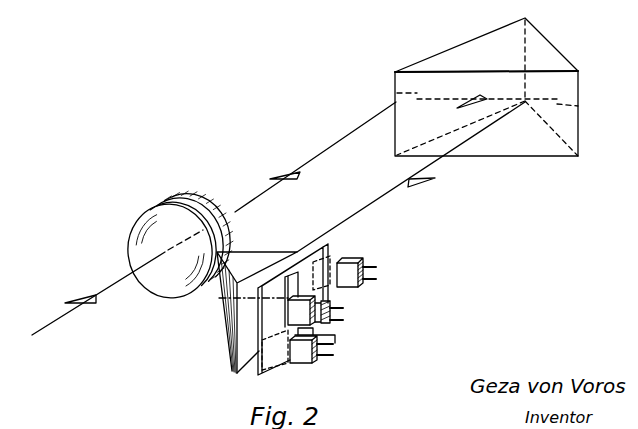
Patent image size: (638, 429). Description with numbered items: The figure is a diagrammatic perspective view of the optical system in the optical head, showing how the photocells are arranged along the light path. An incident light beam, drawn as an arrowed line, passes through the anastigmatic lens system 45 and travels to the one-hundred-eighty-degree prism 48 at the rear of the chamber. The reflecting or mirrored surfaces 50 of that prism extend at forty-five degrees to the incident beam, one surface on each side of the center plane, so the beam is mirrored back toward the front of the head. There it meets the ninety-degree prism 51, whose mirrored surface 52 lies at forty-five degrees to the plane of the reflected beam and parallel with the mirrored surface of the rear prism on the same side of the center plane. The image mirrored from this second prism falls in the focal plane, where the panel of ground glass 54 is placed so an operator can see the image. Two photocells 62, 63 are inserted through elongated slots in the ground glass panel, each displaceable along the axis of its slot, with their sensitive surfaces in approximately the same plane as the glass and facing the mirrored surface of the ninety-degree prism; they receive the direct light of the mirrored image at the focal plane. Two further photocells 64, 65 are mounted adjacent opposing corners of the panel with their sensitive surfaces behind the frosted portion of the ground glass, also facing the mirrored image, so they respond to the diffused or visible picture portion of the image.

The anastigmatic lens system 45 is at (172, 222).
The 180° prism 48 is at (553, 45).
The reflecting or mirrored surfaces 50 is at (601, 104).
The 90° prism 51 is at (267, 257).
The mirrored surface 52 is at (225, 330).
The panel of ground glass 54 is at (236, 371).
The photocell 62 is at (330, 326).
The photocell 63 is at (337, 309).
The photocell 64 is at (305, 357).
The photocell 65 is at (360, 259).